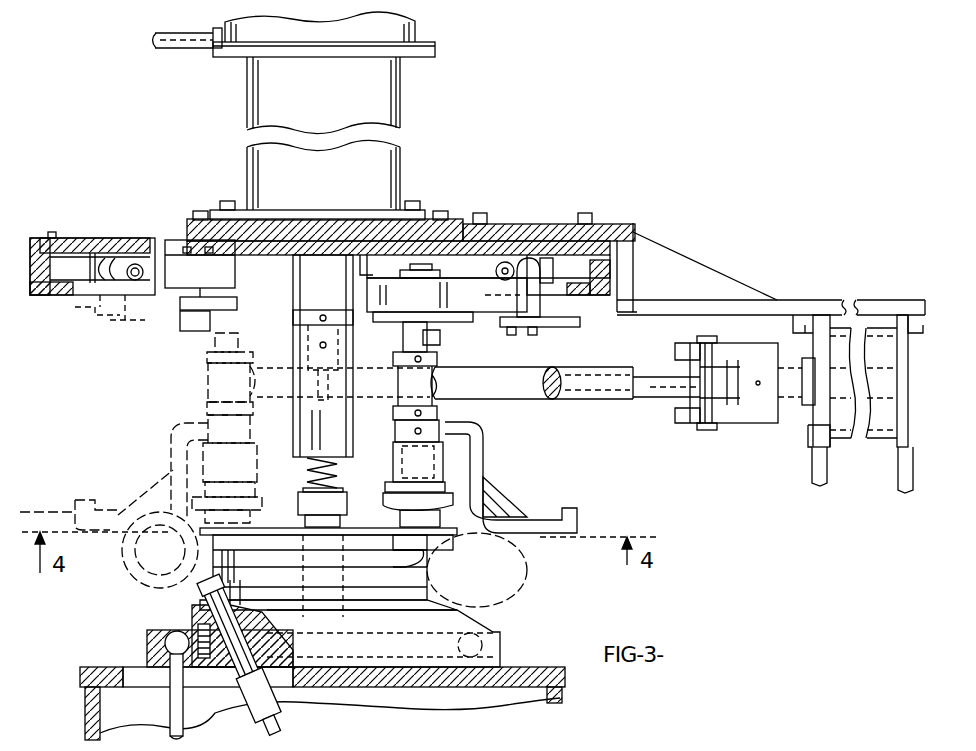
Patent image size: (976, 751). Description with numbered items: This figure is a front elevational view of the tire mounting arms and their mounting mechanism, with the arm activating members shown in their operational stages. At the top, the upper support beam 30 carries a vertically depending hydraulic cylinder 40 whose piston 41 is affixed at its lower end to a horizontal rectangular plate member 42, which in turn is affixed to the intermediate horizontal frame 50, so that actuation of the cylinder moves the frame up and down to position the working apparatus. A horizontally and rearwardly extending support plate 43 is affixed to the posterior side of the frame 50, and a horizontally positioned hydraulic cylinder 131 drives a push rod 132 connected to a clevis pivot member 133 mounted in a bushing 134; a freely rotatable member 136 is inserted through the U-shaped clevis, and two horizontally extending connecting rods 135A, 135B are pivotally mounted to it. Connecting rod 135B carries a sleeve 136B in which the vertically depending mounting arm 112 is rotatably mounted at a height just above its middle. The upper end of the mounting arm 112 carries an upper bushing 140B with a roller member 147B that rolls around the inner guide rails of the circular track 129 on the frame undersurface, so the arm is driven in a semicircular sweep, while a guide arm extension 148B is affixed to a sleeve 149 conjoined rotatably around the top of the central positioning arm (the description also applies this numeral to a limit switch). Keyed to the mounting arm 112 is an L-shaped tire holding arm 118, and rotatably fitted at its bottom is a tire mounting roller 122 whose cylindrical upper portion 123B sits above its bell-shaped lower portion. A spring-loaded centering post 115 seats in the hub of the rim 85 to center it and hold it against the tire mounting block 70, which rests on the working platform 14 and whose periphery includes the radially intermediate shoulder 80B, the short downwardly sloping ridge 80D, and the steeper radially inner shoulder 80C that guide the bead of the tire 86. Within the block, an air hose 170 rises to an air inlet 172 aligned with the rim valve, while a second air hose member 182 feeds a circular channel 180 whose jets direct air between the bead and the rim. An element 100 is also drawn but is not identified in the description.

The upper working platform 14 is at (565, 678).
The upper support beam 30 is at (185, 42).
The hydraulic cylinder 40 is at (420, 39).
The piston 41 is at (396, 155).
The rectangular plate member 42 is at (370, 212).
The support plate 43 is at (858, 300).
The horizontal frame member 50 is at (612, 203).
The tire mounting block 70 is at (503, 655).
The radially intermediate shoulder 80B is at (160, 633).
The radially inner shoulder 80C is at (195, 622).
The downwardly sloping ridge 80D is at (195, 633).
The rim 85 is at (205, 537).
The tire 86 is at (520, 592).
The cylinder assembly 100 is at (38, 270).
The mounting arm 112 is at (445, 425).
The centering post 115 is at (310, 504).
The tire holding arm 118 is at (540, 527).
The tire mounting roller 122 is at (401, 452).
The upper portion 123B is at (445, 460).
The circular track 129 is at (612, 272).
The hydraulic cylinder 131 is at (877, 438).
The push rod 132 is at (788, 400).
The clevis pivot member 133 is at (705, 345).
The bushing 134 is at (687, 420).
The connecting rod 135A is at (548, 400).
The connecting rod 135B is at (585, 401).
The freely rotatable member 136 is at (708, 430).
The sleeve 136B is at (425, 372).
The upper bushing 140B is at (433, 326).
The roller member 147B is at (533, 268).
The guide arm extension 148B is at (457, 283).
The sleeve 149 is at (180, 260).
The air hose 170 is at (262, 703).
The air inlet 172 is at (207, 584).
The circular channel 180 is at (165, 647).
The air hose member 182 is at (170, 712).